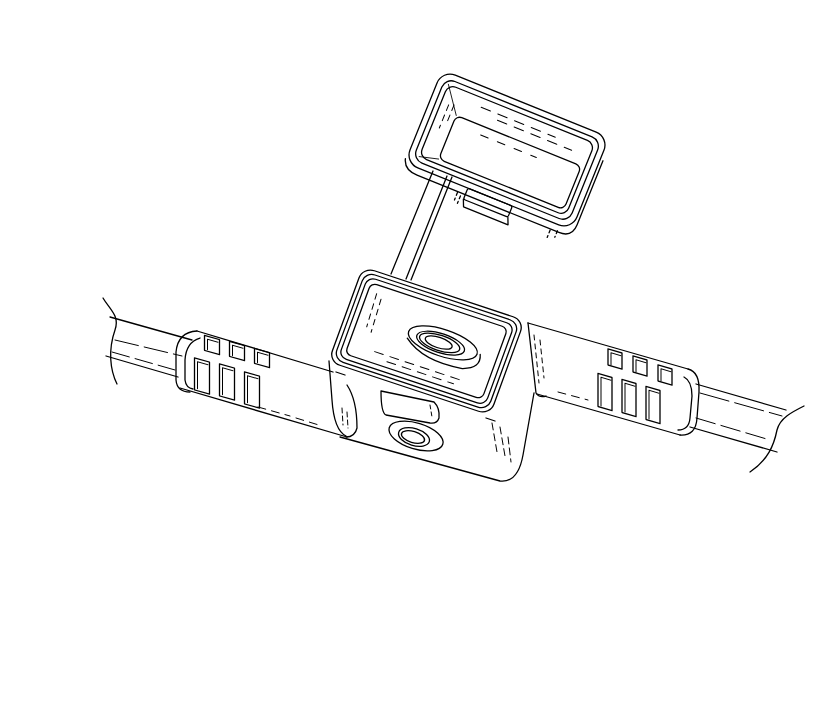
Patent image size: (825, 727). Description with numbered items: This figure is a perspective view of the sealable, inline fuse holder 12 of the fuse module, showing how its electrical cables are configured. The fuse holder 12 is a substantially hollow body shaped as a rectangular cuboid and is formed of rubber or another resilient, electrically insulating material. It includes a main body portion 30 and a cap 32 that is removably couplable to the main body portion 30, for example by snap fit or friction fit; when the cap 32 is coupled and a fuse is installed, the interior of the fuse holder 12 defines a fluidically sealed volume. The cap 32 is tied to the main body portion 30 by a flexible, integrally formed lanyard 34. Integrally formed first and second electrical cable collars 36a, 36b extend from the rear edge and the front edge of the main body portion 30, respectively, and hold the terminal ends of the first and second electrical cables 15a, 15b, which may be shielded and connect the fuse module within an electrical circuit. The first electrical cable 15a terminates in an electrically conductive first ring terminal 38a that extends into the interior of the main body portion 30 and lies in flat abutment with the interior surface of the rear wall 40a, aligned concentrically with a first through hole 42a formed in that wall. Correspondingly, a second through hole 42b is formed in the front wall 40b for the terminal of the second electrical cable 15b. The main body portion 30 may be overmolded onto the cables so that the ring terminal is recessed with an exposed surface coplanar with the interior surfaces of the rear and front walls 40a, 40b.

The fuse holder 12 is at (253, 207).
The first electrical cable 15a is at (727, 413).
The second electrical cable 15b is at (146, 335).
The main body portion 30 is at (517, 449).
The cap 32 is at (541, 100).
The lanyard 34 is at (427, 218).
The first electrical cable collar 36a is at (596, 355).
The second electrical cable collar 36b is at (294, 410).
The first ring terminal 38a is at (489, 357).
The rear wall 40a is at (392, 274).
The front wall 40b is at (468, 461).
The first through hole 42a is at (456, 342).
The second through hole 42b is at (414, 443).